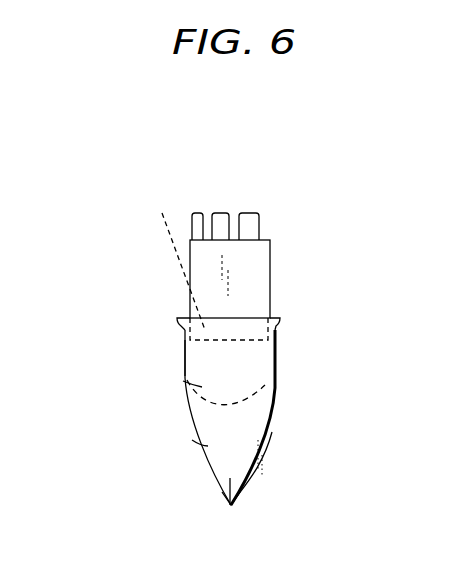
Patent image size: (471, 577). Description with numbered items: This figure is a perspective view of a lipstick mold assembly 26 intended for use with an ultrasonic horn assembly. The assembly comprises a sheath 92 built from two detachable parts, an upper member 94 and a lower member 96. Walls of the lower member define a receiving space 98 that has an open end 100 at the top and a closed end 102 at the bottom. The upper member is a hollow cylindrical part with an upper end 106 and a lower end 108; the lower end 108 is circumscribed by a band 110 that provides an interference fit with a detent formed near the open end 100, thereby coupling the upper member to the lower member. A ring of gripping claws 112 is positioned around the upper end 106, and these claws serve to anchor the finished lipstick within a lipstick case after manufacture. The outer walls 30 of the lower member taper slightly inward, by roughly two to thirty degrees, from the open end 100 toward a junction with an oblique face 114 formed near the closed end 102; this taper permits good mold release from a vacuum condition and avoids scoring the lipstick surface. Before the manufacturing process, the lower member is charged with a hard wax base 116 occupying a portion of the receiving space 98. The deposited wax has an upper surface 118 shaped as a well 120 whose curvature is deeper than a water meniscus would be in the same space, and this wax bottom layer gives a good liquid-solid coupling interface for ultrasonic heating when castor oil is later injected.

The mold assembly 26 is at (338, 356).
The outer walls 30 is at (275, 415).
The sheath 92 is at (160, 346).
The upper member 94 is at (270, 268).
The lower member 96 is at (183, 362).
The receiving space 98 is at (180, 350).
The open end 100 is at (240, 305).
The closed end 102 is at (210, 480).
The upper end 106 is at (270, 243).
The lower end 108 is at (280, 332).
The band 110 is at (170, 258).
The gripping claws 112 is at (246, 212).
The oblique face 114 is at (260, 478).
The hard wax base 116 is at (192, 440).
The upper surface 118 is at (190, 382).
The well 120 is at (232, 400).